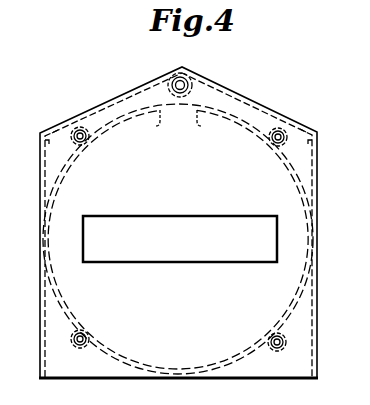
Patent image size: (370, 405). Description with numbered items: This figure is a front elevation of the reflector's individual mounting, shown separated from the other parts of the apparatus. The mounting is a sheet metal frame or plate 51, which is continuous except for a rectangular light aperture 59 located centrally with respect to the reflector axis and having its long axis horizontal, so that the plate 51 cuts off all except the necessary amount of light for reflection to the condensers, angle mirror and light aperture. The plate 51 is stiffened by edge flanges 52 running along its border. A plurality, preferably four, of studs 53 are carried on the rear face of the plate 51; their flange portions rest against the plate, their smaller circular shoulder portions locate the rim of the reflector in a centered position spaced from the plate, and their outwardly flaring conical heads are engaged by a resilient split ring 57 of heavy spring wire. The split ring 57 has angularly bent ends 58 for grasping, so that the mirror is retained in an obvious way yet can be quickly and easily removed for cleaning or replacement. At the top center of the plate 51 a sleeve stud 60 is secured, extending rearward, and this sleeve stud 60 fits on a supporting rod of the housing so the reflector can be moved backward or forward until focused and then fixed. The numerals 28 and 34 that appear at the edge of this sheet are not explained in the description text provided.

The housing 28 is at (330, 397).
The side wall 34 is at (361, 276).
The frame or plate 51 is at (274, 368).
The edge flanges 52 is at (318, 343).
The studs 53 is at (79, 348).
The resilient split ring 57 is at (108, 126).
The angularly bent ends 58 is at (162, 129).
The rectangular light aperture 59 is at (176, 263).
The sleeve stud 60 is at (192, 78).